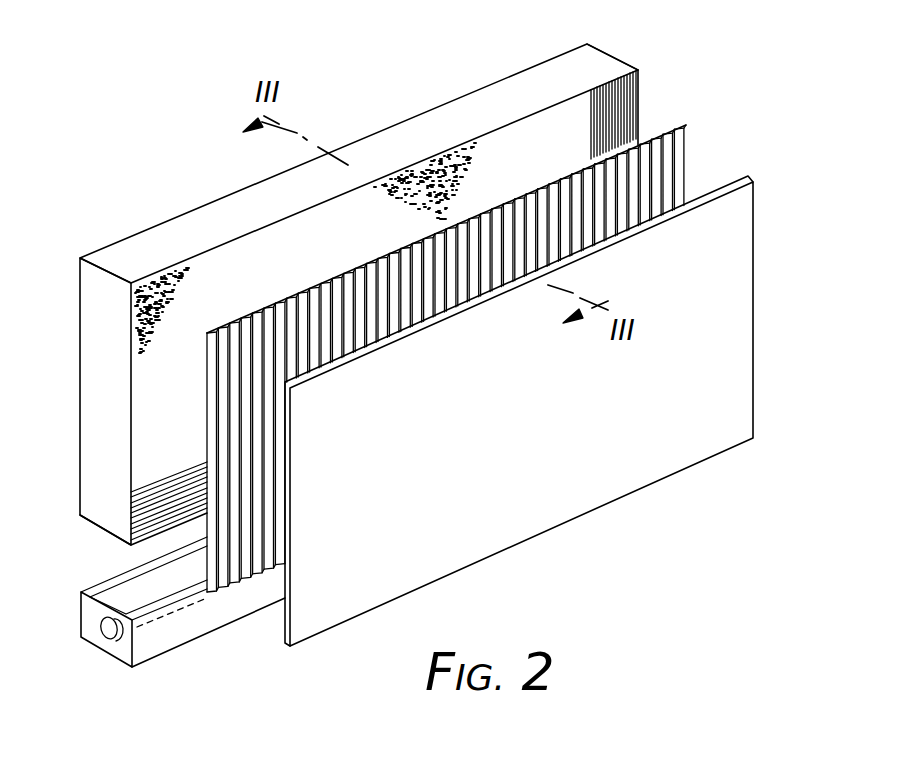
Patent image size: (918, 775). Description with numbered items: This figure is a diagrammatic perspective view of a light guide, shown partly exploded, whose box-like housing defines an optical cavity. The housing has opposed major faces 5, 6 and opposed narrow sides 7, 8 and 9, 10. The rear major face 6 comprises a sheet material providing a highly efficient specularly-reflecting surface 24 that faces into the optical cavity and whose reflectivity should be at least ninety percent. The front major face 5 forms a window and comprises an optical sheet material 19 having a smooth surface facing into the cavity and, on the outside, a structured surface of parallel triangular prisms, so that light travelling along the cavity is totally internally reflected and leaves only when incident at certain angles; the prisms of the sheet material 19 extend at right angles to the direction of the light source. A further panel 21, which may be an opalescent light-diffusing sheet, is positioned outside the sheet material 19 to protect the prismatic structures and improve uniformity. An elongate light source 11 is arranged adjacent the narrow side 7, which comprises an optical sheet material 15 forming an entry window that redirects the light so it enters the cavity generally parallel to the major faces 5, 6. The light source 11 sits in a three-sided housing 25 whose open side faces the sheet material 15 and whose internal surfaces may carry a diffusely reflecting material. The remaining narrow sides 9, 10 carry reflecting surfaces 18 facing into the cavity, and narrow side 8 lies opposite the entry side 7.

The major face 5 is at (480, 552).
The major face 6 is at (203, 205).
The narrow side 7 is at (102, 533).
The narrow side 8 is at (148, 235).
The narrow side 9 is at (618, 57).
The narrow side 10 is at (90, 387).
The elongate light source 11 is at (103, 639).
The optical sheet material 15 is at (147, 508).
The reflecting surfaces 18 is at (628, 97).
The optical sheet material 19 is at (690, 147).
The further panel 21 is at (523, 412).
The specularly-reflecting surface 24 is at (467, 173).
The three-sided housing 25 is at (192, 632).